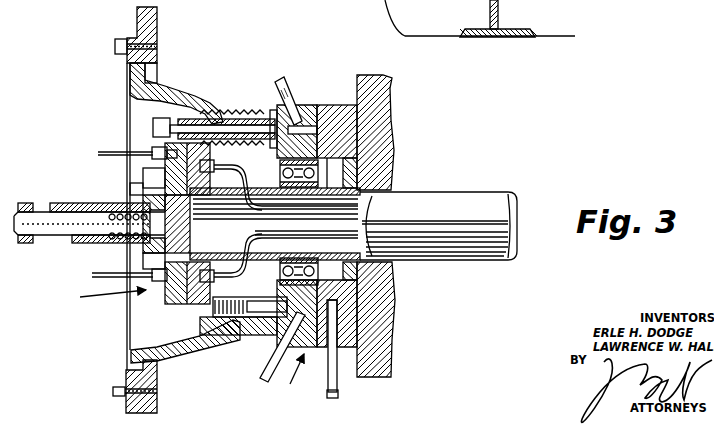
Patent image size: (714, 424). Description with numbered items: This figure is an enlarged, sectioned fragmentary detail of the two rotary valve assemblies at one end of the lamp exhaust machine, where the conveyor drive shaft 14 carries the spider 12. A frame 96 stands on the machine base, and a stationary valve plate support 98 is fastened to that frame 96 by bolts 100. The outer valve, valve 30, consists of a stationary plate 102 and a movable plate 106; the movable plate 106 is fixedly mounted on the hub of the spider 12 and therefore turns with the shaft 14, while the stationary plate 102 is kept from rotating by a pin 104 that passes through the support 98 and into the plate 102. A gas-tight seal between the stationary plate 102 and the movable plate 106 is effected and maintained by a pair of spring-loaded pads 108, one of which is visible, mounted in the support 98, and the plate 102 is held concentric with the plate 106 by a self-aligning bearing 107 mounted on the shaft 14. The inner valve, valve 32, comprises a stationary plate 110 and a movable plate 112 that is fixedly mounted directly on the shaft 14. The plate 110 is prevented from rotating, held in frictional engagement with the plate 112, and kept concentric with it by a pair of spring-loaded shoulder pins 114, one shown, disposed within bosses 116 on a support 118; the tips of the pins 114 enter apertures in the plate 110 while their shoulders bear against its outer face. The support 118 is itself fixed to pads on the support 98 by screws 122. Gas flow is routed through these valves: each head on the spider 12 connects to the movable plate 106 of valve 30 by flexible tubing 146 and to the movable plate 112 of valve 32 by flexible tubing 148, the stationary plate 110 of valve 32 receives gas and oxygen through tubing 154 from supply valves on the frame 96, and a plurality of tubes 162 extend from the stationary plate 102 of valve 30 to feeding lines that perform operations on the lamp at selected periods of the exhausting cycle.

The spider 12 is at (382, 130).
The shaft 14 is at (457, 250).
The valve 30 is at (284, 381).
The valve 32 is at (100, 297).
The frame 96 is at (155, 407).
The stationary valve plate support 98 is at (168, 88).
The bolts 100 is at (115, 42).
The plate 102 is at (304, 106).
The pin 104 is at (260, 308).
The movable plate 106 is at (335, 106).
The self-aligning bearing 107 is at (282, 168).
The spring-loaded pads 108 is at (222, 122).
The plate 110 is at (167, 290).
The movable plate 112 is at (190, 296).
The spring-loaded shoulder pins 114 is at (45, 222).
The bosses 116 is at (78, 202).
The support 118 is at (148, 171).
The screws 122 is at (135, 186).
The flexible tubing 146 is at (337, 387).
The flexible tubing 148 is at (365, 188).
The tubing 154 is at (103, 274).
The tubes 162 is at (276, 94).